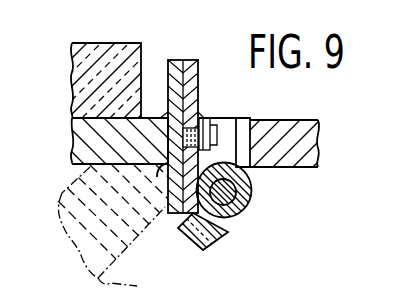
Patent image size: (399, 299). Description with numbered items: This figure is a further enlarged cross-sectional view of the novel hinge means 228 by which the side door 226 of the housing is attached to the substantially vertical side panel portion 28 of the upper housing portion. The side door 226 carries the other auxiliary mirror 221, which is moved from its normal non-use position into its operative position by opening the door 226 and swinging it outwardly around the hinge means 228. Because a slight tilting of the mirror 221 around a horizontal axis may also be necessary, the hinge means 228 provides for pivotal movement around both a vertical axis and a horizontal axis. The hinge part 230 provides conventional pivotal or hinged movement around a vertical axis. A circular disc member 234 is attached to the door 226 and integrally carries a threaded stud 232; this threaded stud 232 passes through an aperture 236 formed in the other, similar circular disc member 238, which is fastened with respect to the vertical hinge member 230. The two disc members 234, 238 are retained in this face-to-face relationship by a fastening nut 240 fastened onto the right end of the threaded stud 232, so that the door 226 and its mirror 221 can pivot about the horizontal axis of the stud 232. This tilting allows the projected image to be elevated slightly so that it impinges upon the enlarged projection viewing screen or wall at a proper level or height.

The auxiliary mirror 221 is at (112, 13).
The circular disc member 234 is at (171, 75).
The threaded stud 232 is at (212, 128).
The fastening nut 240 is at (248, 118).
The side panel portion 28 is at (303, 127).
The side door 226 is at (78, 142).
The aperture 236 is at (166, 176).
The circular disc member 238 is at (186, 221).
The hinge part 230 is at (233, 193).
The hinge means 228 is at (252, 216).